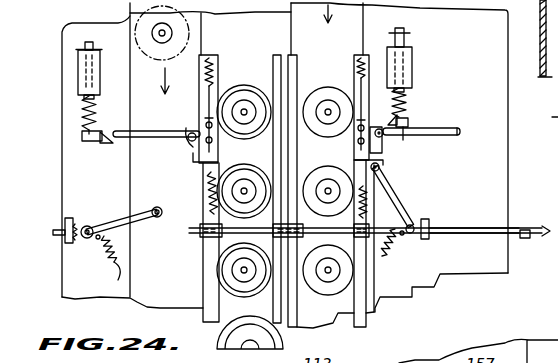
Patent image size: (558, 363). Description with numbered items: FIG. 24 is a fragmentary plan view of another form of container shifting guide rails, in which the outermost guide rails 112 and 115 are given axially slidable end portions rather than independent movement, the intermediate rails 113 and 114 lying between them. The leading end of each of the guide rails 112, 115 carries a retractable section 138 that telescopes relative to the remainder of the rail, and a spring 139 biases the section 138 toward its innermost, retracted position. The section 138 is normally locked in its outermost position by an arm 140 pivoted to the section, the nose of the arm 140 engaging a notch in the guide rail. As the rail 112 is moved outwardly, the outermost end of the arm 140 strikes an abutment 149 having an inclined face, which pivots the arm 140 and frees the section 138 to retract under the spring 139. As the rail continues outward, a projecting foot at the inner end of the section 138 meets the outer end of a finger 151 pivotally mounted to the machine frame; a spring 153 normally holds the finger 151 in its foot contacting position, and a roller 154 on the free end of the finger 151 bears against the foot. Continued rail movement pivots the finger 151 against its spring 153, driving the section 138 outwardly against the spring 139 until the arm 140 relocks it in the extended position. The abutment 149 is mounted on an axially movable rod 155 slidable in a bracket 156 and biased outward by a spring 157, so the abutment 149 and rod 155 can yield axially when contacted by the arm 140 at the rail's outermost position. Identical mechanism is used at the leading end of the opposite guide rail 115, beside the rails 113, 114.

The guide rail 112 is at (207, 280).
The left central bar 113 is at (281, 281).
The right central bar 114 is at (300, 307).
The guide rail 115 is at (374, 289).
The retractable section 138 is at (218, 60).
The spring 139 is at (206, 196).
The arm 140 is at (149, 140).
The abutment 149 is at (82, 141).
The finger 151 is at (399, 197).
The spring 153 is at (118, 280).
The roller 154 is at (157, 220).
The rod 155 is at (82, 100).
The bracket 156 is at (100, 58).
The spring 157 is at (82, 110).